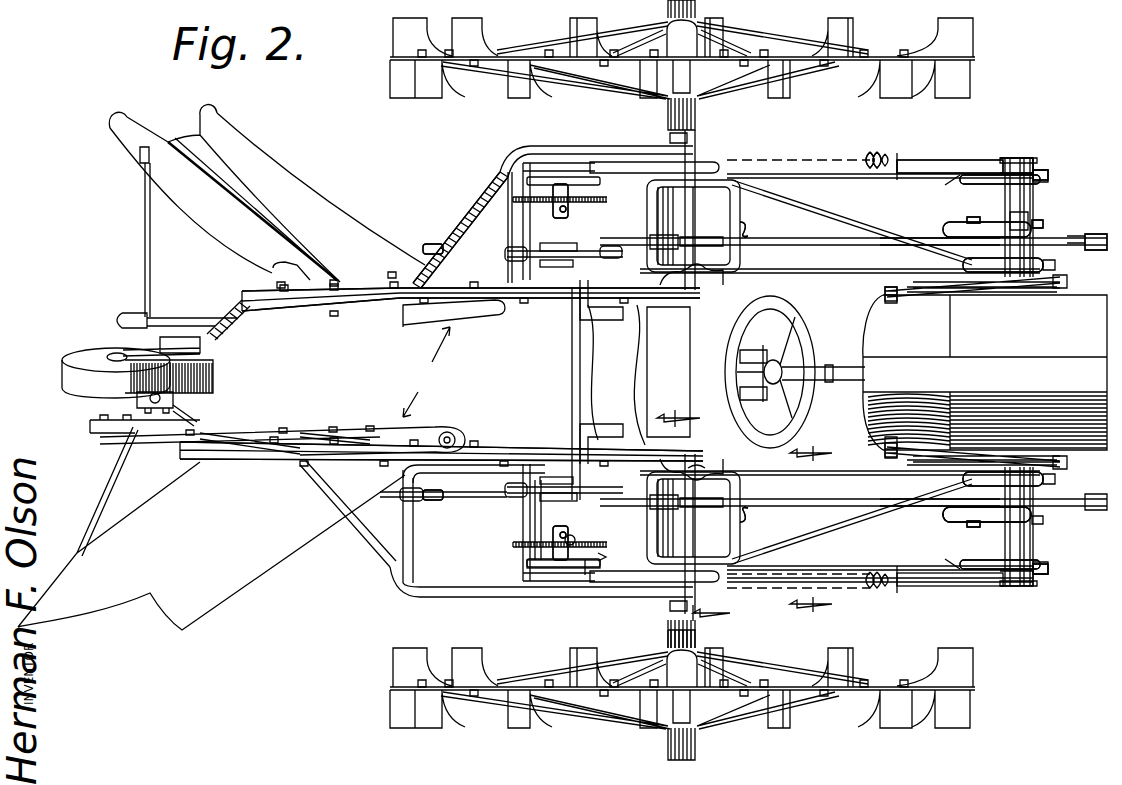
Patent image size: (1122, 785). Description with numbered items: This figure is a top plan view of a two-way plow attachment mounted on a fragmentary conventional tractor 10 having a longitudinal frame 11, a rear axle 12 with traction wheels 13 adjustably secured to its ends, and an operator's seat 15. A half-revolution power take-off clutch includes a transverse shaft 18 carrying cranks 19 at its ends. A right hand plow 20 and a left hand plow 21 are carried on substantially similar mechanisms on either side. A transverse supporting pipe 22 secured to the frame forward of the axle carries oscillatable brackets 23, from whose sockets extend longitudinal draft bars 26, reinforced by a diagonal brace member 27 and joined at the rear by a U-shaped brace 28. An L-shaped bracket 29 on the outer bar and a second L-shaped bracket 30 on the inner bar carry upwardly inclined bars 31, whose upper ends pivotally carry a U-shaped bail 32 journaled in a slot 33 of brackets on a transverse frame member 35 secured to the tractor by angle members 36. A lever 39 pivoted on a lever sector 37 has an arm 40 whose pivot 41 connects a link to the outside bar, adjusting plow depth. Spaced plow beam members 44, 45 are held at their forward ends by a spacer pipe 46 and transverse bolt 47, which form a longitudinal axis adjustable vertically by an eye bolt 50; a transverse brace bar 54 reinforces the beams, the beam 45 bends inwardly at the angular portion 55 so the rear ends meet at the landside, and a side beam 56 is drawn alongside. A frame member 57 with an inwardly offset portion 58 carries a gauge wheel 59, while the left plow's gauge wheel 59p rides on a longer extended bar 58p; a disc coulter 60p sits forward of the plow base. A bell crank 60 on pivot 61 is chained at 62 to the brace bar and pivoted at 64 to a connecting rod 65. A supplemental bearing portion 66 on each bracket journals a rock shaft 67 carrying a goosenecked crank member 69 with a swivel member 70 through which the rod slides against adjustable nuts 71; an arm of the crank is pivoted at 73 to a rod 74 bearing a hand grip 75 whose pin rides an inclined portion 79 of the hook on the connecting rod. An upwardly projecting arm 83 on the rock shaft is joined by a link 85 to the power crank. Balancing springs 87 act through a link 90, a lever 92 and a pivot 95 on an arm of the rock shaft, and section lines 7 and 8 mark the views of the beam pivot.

The section line 7 is at (695, 515).
The section line 8 is at (818, 529).
The tractor 10 is at (985, 372).
The frame 11 is at (740, 313).
The rear axle 12 is at (793, 323).
The traction wheels 13 is at (772, 36).
The operator's seat 15 is at (680, 369).
The transverse shaft 18 is at (883, 449).
The cranks 19 is at (905, 289).
The right hand plow 20 is at (147, 577).
The left hand plow 21 is at (272, 200).
The supporting beam or pipe 22 is at (1037, 207).
The brackets 23 is at (985, 177).
The draft bars 26 is at (930, 179).
The reinforcing brace member 27 is at (853, 232).
The U-shaped brace 28 is at (742, 236).
The L-shaped bracket 29 is at (719, 160).
The second L-shaped bracket 30 is at (700, 289).
The upwardly inclined bars 31 is at (615, 170).
The U-shaped bail 32 is at (535, 219).
The slot 33 is at (548, 567).
The transverse frame member 35 is at (570, 368).
The angle members 36 is at (604, 320).
The lever sector 37 is at (582, 372).
The lever 39 is at (558, 222).
The arm 40 is at (605, 557).
The pivot 41 is at (590, 566).
The plow beam member 44 is at (568, 302).
The plow beam member 45 is at (587, 147).
The spacer tube or pipe 46 is at (690, 214).
The transverse bolt 47 is at (698, 137).
The eye bolt 50 is at (680, 468).
The transverse brace bar 54 is at (508, 188).
The angular inward portion 55 is at (458, 210).
The side beam 56 is at (366, 290).
The frame member 57 is at (232, 442).
The offset portion 58 is at (198, 414).
The extended bar 58p is at (231, 334).
The gauge wheel 59 is at (215, 373).
The gauge wheel 59p is at (72, 350).
The bell crank 60 is at (576, 257).
The disc or coulter 60p is at (454, 358).
The pivot 61 is at (551, 486).
The chain 62 is at (606, 246).
The pivot 64 is at (500, 500).
The connecting rod 65 is at (928, 240).
The supplemental bearing portion 66 is at (1012, 218).
The rock shaft 67 is at (1038, 190).
The goosenecked crank member 69 is at (956, 522).
The buckle or swivel member 70 is at (907, 237).
The adjustable nuts 71 is at (1098, 248).
The pivot 73 is at (1045, 226).
The rod 74 is at (904, 237).
The hand grip 75 is at (718, 237).
The inclined portion 79 is at (560, 522).
The upwardly projecting arm 83 is at (1058, 289).
The link 85 is at (1026, 293).
The balancing springs 87 is at (827, 158).
The link 90 is at (903, 158).
The lever 92 is at (966, 168).
The pivot 95 is at (1018, 160).